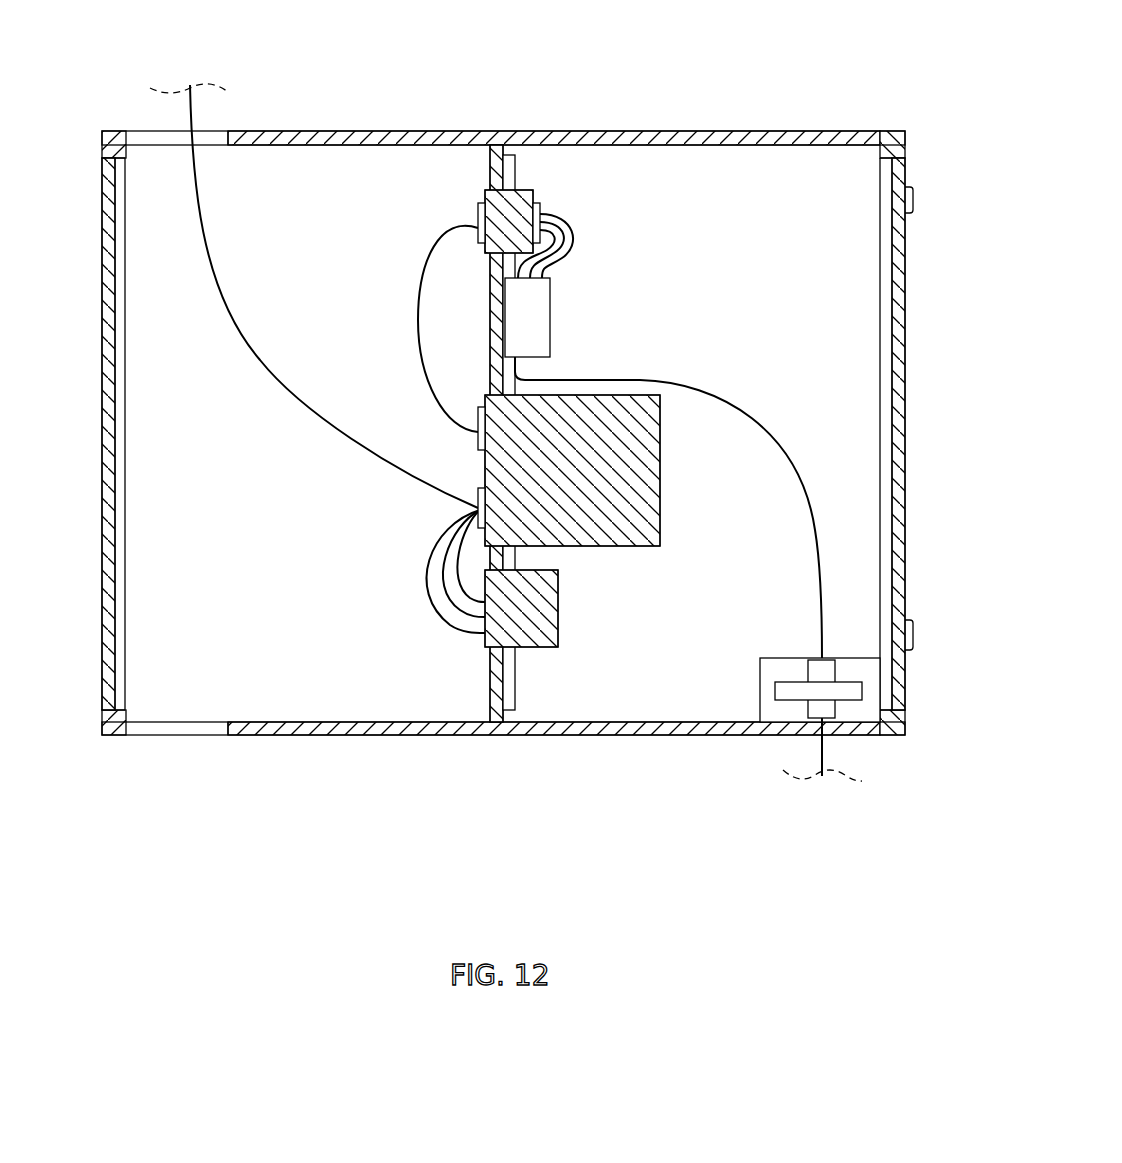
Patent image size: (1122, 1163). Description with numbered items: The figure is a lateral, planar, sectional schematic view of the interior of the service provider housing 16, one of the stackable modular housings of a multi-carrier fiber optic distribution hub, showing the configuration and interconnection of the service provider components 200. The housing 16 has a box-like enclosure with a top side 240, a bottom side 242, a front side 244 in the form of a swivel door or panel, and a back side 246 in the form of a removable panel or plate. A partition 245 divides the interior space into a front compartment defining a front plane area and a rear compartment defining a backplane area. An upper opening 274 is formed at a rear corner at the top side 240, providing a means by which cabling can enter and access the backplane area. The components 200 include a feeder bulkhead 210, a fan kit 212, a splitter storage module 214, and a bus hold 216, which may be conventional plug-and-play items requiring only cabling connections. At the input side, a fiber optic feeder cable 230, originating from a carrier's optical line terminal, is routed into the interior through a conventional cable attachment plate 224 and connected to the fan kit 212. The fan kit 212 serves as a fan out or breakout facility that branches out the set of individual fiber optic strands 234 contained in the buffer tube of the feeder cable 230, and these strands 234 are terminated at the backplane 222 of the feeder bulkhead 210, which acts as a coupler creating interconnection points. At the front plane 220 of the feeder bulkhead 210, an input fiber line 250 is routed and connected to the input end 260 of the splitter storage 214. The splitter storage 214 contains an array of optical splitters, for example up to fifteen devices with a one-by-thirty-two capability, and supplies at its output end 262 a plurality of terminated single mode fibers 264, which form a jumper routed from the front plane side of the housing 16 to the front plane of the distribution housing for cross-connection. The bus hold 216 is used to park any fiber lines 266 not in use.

The first service provider housing 16 is at (738, 86).
The service provider components 200 is at (188, 552).
The feeder bulkhead 210 is at (527, 187).
The fan kit 212 is at (555, 313).
The splitter storage module 214 is at (660, 468).
The bus hold 216 is at (560, 617).
The front plane 220 is at (477, 195).
The backplane 222 is at (543, 200).
The cable attachment plate 224 is at (760, 693).
The fiber optic feeder cable 230 is at (740, 400).
The fiber optic strands 234 is at (583, 223).
The top side 240 is at (463, 133).
The bottom side 242 is at (268, 727).
The front side 244 is at (108, 262).
The partition 245 is at (490, 683).
The back side 246 is at (897, 385).
The input fiber line 250 is at (430, 248).
The input end 260 is at (478, 437).
The output end 262 is at (478, 500).
The single mode fibers 264 is at (350, 450).
The fiber lines not in use 266 is at (425, 587).
The upper opening 274 is at (274, 206).